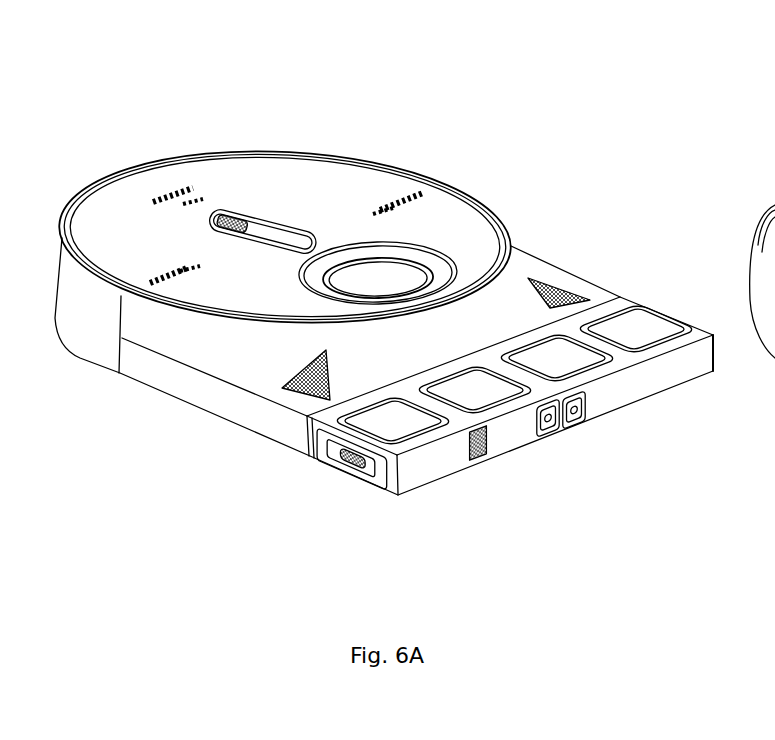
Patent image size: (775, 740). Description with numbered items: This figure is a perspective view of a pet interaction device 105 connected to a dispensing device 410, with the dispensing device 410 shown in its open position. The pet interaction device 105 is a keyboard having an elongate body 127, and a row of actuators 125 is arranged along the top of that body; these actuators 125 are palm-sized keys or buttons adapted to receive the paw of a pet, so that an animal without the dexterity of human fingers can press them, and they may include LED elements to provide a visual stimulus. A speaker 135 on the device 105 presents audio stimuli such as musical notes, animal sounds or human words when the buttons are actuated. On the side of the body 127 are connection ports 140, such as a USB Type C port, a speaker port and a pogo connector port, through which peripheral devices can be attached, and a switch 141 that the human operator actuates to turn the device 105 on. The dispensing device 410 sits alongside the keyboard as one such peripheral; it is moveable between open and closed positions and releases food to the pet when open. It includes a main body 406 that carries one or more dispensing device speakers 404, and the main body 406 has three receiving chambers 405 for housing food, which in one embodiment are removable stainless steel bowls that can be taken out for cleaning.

The pet interaction device 105 is at (670, 303).
The actuators 125 is at (636, 318).
The elongate body 127 is at (505, 424).
The speaker 135 is at (467, 455).
The connection ports 140 is at (355, 458).
The switch 141 is at (550, 430).
The dispensing device speakers 404 is at (308, 372).
The receiving chambers 405 is at (363, 273).
The main body 406 is at (428, 178).
The dispensing device 410 is at (308, 137).